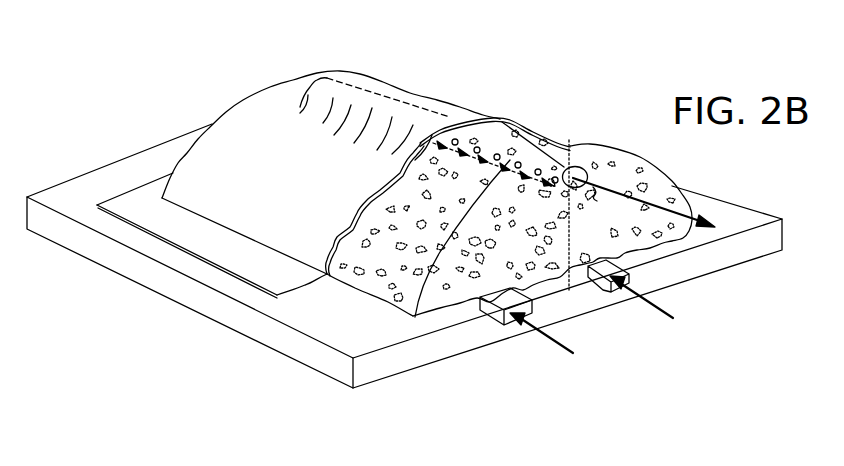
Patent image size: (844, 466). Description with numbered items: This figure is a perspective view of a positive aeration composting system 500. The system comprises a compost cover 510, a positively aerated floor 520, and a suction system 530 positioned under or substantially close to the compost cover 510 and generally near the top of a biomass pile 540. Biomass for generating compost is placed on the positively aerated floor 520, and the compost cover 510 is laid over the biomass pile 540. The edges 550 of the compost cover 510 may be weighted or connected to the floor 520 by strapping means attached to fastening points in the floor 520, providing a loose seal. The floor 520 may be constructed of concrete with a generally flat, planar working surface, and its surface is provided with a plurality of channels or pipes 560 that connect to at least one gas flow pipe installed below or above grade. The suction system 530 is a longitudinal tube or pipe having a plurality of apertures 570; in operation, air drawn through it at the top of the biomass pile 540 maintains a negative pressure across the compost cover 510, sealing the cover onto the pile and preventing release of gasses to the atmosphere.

The positive aeration composting system 500 is at (203, 67).
The compost cover 510 is at (452, 110).
The positively aerated floor 520 is at (97, 222).
The suction system 530 is at (500, 124).
The biomass pile 540 is at (445, 273).
The edges of compost cover 550 is at (208, 240).
The channels or pipes 560 is at (510, 326).
The apertures 570 is at (571, 142).